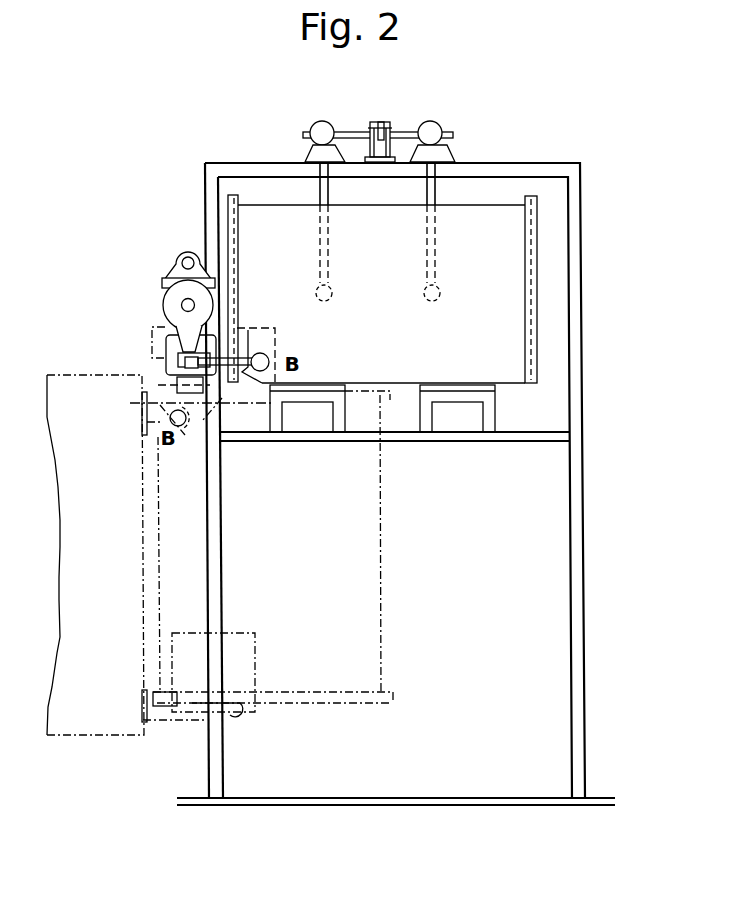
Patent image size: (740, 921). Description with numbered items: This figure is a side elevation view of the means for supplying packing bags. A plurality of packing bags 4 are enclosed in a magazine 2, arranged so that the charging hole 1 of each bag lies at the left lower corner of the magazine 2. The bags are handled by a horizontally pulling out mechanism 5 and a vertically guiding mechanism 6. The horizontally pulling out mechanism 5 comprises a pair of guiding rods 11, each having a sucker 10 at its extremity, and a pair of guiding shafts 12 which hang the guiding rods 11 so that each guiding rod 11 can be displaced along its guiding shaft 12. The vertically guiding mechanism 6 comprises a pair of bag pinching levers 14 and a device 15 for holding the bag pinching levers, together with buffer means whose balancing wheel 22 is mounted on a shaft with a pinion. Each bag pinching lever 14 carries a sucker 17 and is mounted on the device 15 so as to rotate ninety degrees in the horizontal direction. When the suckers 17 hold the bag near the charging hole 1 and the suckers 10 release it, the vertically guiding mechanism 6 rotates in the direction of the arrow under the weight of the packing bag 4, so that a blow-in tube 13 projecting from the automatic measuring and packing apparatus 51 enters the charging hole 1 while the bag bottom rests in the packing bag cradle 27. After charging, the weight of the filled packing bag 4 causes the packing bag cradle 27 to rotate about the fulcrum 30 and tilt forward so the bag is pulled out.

The charging hole 1 is at (250, 378).
The magazine 2 is at (381, 294).
The packing bag 4 is at (503, 213).
The horizontally pulling out mechanism 5 is at (374, 114).
The vertically guiding mechanism 6 is at (146, 298).
The sucker 10 is at (329, 300).
The guiding rod 11 is at (300, 178).
The guiding shaft 12 is at (434, 126).
The blow-in tube 13 is at (183, 433).
The bag pinching lever 14 is at (238, 350).
The device for holding the bag pinching levers 15 is at (158, 345).
The sucker 17 is at (245, 356).
The balancing wheel 22 is at (178, 290).
The packing bag cradle 27 is at (233, 672).
The fulcrum 30 is at (241, 720).
The automatic measuring and packing apparatus 51 is at (97, 555).